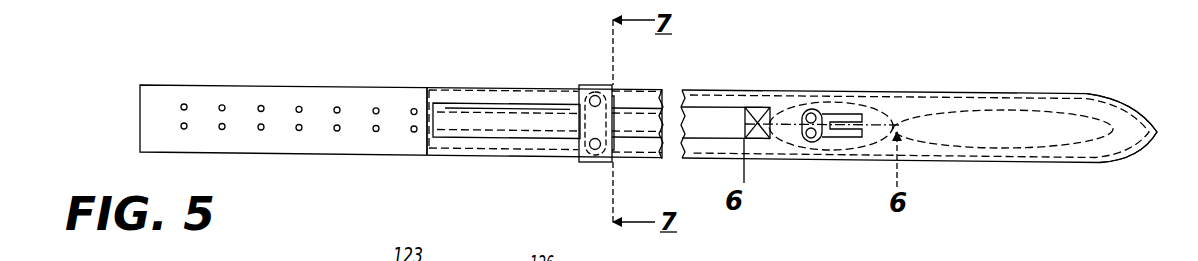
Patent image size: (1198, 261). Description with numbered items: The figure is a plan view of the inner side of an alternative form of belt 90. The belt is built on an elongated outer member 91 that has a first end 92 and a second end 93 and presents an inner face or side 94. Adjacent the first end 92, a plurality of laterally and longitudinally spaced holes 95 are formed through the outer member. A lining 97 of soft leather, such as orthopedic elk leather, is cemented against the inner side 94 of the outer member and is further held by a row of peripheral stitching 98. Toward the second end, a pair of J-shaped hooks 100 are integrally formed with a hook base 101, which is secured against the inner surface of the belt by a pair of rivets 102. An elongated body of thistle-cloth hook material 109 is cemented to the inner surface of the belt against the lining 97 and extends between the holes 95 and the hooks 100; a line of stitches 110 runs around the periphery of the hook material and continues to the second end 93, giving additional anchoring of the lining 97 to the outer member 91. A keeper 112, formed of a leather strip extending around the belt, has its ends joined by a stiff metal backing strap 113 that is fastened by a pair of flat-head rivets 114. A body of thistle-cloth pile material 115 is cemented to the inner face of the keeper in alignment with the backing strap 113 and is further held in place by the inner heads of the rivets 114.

The belt 90 is at (852, 78).
The elongated outer member 91 is at (414, 54).
The first end 92 is at (140, 116).
The second end 93 is at (1157, 133).
The inner face or side 94 is at (365, 123).
The holes 95 is at (299, 106).
The lining 97 is at (455, 143).
The peripheral stitching 98 is at (487, 90).
The J-shaped hooks 100 is at (860, 117).
The hook base 101 is at (802, 130).
The rivets 102 is at (812, 141).
The thistle-cloth hook material 109 is at (522, 117).
The line of stitches 110 is at (493, 131).
The keeper 112 is at (597, 163).
The metal backing strap 113 is at (583, 106).
The flat-head rivets 114 is at (597, 95).
The thistle-cloth pile material 115 is at (610, 102).